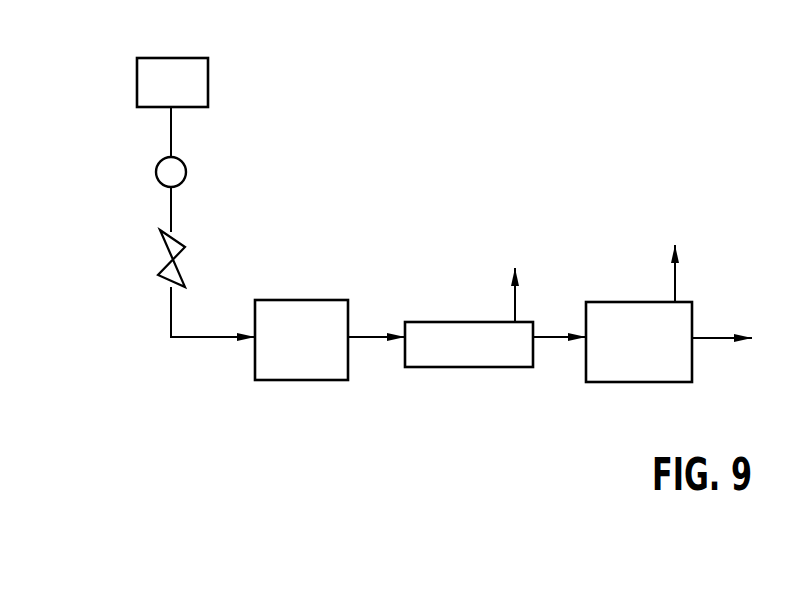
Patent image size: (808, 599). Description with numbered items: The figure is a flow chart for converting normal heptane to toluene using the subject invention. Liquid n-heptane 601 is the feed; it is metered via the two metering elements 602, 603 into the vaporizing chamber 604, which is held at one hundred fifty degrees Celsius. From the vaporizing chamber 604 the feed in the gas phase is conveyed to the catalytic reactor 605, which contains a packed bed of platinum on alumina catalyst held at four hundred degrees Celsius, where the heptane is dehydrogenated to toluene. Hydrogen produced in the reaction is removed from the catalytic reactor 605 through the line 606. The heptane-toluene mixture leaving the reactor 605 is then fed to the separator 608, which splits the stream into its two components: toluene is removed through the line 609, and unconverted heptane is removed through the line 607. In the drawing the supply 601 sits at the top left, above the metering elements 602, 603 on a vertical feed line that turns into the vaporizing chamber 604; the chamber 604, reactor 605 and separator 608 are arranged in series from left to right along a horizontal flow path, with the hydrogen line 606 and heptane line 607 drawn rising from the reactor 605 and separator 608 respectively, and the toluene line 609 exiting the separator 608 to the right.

The liquid n-heptane 601 is at (193, 101).
The metering element 602 is at (186, 167).
The metering element 603 is at (160, 247).
The vaporizing chamber 604 is at (329, 358).
The catalytic reactor 605 is at (517, 367).
The line 606 is at (519, 285).
The line 607 is at (678, 258).
The separator 608 is at (611, 359).
The line 609 is at (740, 340).